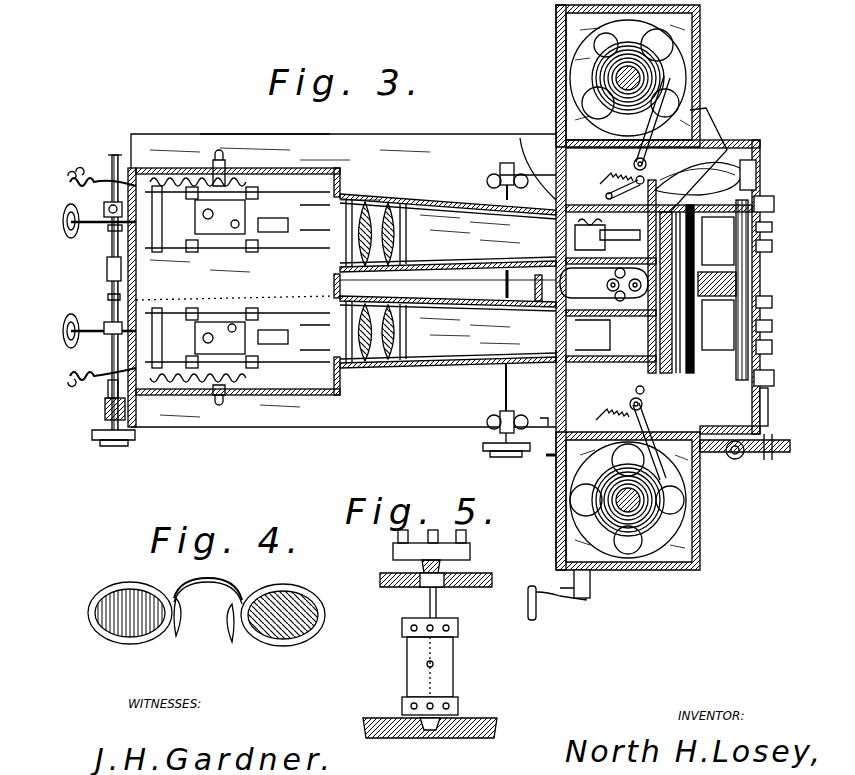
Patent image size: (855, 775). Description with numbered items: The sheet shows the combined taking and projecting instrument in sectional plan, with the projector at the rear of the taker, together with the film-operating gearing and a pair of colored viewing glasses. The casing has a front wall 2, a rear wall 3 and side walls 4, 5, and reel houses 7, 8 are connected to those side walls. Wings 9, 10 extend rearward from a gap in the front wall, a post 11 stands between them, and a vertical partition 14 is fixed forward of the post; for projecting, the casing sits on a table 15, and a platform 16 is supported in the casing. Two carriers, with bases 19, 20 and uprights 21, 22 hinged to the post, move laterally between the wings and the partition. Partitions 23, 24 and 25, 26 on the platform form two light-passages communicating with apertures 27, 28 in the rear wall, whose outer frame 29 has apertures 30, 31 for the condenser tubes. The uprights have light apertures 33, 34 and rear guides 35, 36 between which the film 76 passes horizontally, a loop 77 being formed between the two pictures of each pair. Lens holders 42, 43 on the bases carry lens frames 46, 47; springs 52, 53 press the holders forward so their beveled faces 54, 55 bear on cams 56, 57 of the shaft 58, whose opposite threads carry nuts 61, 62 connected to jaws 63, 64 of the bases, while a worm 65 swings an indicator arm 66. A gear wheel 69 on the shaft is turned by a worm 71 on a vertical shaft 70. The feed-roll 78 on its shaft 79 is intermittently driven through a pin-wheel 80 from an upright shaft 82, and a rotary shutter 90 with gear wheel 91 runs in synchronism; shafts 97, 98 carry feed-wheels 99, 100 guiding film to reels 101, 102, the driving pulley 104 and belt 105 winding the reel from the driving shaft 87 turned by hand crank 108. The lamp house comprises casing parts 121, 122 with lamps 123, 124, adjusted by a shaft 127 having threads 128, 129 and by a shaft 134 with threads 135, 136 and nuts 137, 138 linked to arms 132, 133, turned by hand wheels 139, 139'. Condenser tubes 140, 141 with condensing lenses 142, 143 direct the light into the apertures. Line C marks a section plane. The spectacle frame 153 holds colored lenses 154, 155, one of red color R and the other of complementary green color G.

In FIG. 3, the front wall 2 is at (760, 186).
In FIG. 3, the rear wall 3 is at (548, 418).
In FIG. 3, the side wall 4 is at (706, 460).
In FIG. 3, the side wall 5 is at (740, 146).
In FIG. 3, the reel house 7 is at (700, 544).
In FIG. 3, the reel house 8 is at (556, 34).
In FIG. 3, the wing 9 is at (768, 400).
In FIG. 3, the wing 10 is at (774, 204).
In FIG. 3, the post 11 is at (616, 304).
In FIG. 3, the vertical partition 14 is at (756, 275).
In FIG. 3, the table 15 is at (364, 150).
In FIG. 3, the platform 16 is at (556, 140).
In FIG. 5, the platform 16 is at (376, 718).
In FIG. 3, the base 19 is at (774, 378).
In FIG. 3, the base 20 is at (770, 214).
In FIG. 3, the upright 21 is at (740, 460).
In FIG. 3, the upright 22 is at (756, 166).
In FIG. 3, the partition 23 is at (604, 394).
In FIG. 3, the partition 24 is at (520, 328).
In FIG. 3, the partition 25 is at (556, 248).
In FIG. 3, the partition 26 is at (530, 232).
In FIG. 3, the aperture 27 is at (550, 344).
In FIG. 3, the aperture 28 is at (520, 252).
In FIG. 3, the frame 29 is at (520, 142).
In FIG. 3, the aperture 30 is at (504, 404).
In FIG. 3, the aperture 31 is at (504, 163).
In FIG. 3, the aperture 33 is at (712, 460).
In FIG. 3, the aperture 34 is at (700, 160).
In FIG. 3, the guide 35 is at (630, 348).
In FIG. 3, the guide 36 is at (618, 229).
In FIG. 3, the lens holder 42 is at (770, 392).
In FIG. 3, the lens holder 43 is at (758, 206).
In FIG. 3, the lens frame 46 is at (766, 422).
In FIG. 3, the lens frame 47 is at (752, 176).
In FIG. 3, the spring 52 is at (718, 325).
In FIG. 3, the spring 53 is at (718, 241).
In FIG. 3, the beveled bearing face 54 is at (772, 352).
In FIG. 3, the beveled bearing face 55 is at (772, 228).
In FIG. 3, the cam 56 is at (774, 350).
In FIG. 3, the cam 57 is at (774, 236).
In FIG. 3, the operating and controlling shaft 58 is at (770, 410).
In FIG. 3, the adjusting nut 61 is at (772, 328).
In FIG. 3, the adjusting nut 62 is at (772, 248).
In FIG. 3, the jaw 63 is at (774, 312).
In FIG. 3, the jaw 64 is at (774, 256).
In FIG. 3, the worm 65 is at (772, 304).
In FIG. 3, the indicator arm 66 is at (740, 288).
In FIG. 3, the gear wheel 69 is at (770, 455).
In FIG. 3, the shaft 70 is at (734, 462).
In FIG. 3, the worm 71 is at (748, 462).
In FIG. 3, the film 76 is at (668, 110).
In FIG. 3, the loop 77 is at (524, 285).
In FIG. 3, the feed-roll 78 is at (648, 240).
In FIG. 5, the feed-roll 78 is at (458, 622).
In FIG. 3, the operating shaft 79 is at (590, 302).
In FIG. 5, the operating shaft 79 is at (428, 604).
In FIG. 5, the pin-wheel 80 is at (393, 550).
In FIG. 3, the upright shaft 82 is at (600, 238).
In FIG. 3, the driving shaft 87 is at (584, 598).
In FIG. 3, the rotary shutter 90 is at (778, 452).
In FIG. 3, the gear wheel 91 is at (636, 304).
In FIG. 3, the shaft 97 is at (606, 416).
In FIG. 3, the shaft 98 is at (636, 92).
In FIG. 3, the feed-wheel 99 is at (684, 540).
In FIG. 3, the feed-wheel 100 is at (706, 118).
In FIG. 3, the reel 101 is at (660, 530).
In FIG. 3, the reel 102 is at (690, 57).
In FIG. 3, the driving pulley 104 is at (556, 470).
In FIG. 3, the belt 105 is at (592, 502).
In FIG. 3, the hand crank 108 is at (560, 600).
In FIG. 3, the casing part 121 is at (178, 395).
In FIG. 3, the casing part 122 is at (168, 168).
In FIG. 3, the lamp 123 is at (232, 318).
In FIG. 3, the lamp 124 is at (232, 238).
In FIG. 3, the shaft 127 is at (490, 430).
In FIG. 3, the screw thread 128 is at (500, 370).
In FIG. 3, the screw thread 129 is at (500, 282).
In FIG. 3, the arm 132 is at (105, 362).
In FIG. 3, the arm 133 is at (104, 204).
In FIG. 3, the shaft 134 is at (108, 296).
In FIG. 3, the screw thread 135 is at (106, 390).
In FIG. 3, the screw thread 136 is at (110, 160).
In FIG. 3, the adjusting nut 137 is at (106, 322).
In FIG. 3, the adjusting nut 138 is at (106, 228).
In FIG. 3, the hand wheel 139 is at (107, 451).
In FIG. 3, the hand wheel 139' is at (492, 465).
In FIG. 3, the condenser tube 140 is at (430, 369).
In FIG. 3, the condenser tube 141 is at (448, 206).
In FIG. 3, the condensing lens 142 is at (392, 342).
In FIG. 3, the condensing lens 143 is at (392, 245).
In FIG. 4, the spectacle frame 153 is at (232, 622).
In FIG. 4, the colored lens 154 is at (118, 596).
In FIG. 4, the colored lens 155 is at (278, 600).
In FIG. 3, the axis C is at (556, 334).
In FIG. 4, the red color R is at (112, 628).
In FIG. 4, the green color G is at (290, 636).